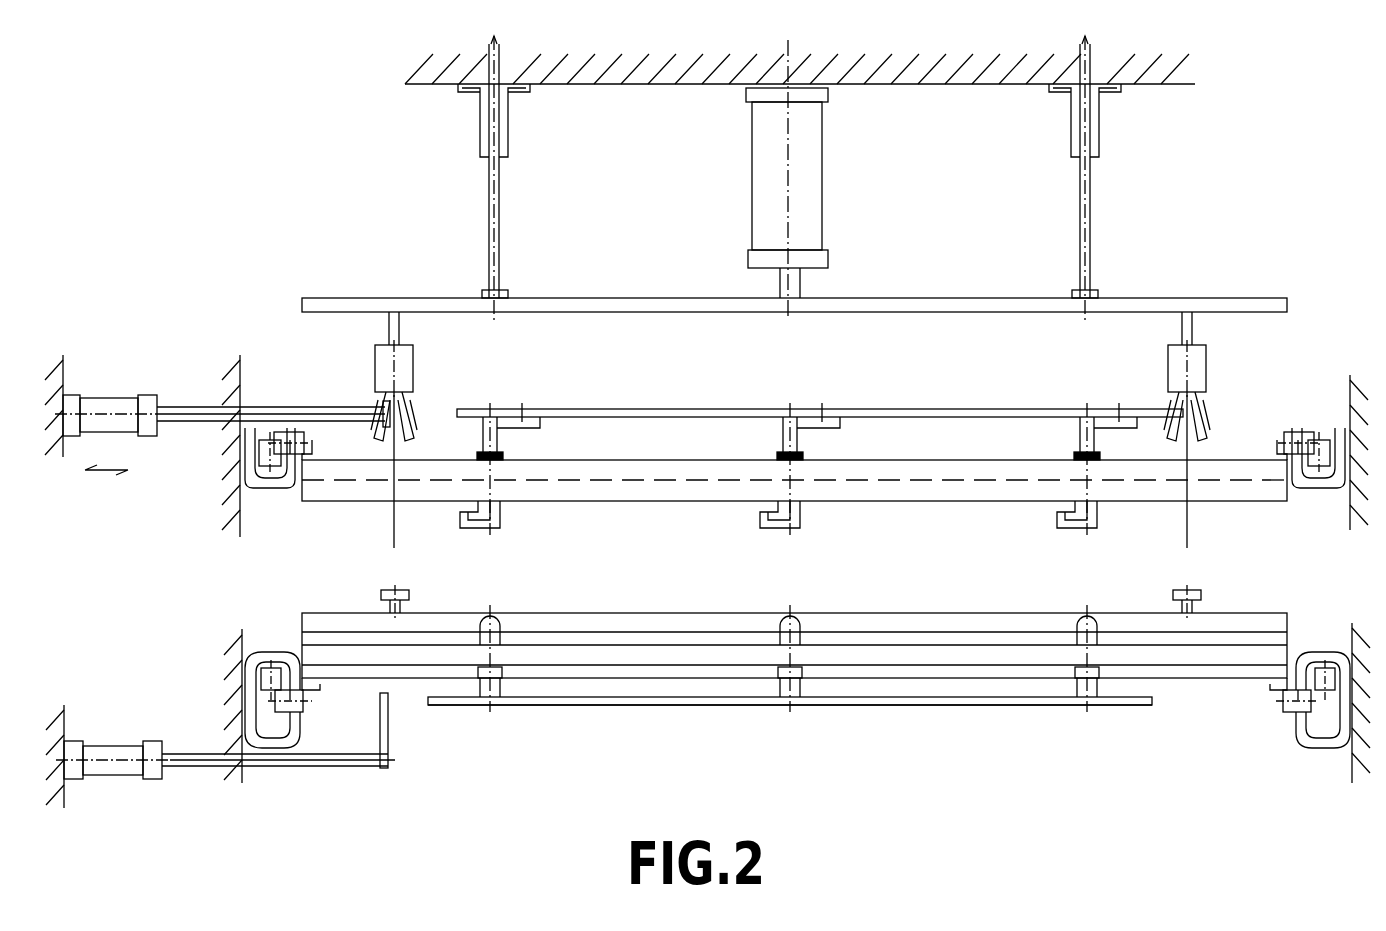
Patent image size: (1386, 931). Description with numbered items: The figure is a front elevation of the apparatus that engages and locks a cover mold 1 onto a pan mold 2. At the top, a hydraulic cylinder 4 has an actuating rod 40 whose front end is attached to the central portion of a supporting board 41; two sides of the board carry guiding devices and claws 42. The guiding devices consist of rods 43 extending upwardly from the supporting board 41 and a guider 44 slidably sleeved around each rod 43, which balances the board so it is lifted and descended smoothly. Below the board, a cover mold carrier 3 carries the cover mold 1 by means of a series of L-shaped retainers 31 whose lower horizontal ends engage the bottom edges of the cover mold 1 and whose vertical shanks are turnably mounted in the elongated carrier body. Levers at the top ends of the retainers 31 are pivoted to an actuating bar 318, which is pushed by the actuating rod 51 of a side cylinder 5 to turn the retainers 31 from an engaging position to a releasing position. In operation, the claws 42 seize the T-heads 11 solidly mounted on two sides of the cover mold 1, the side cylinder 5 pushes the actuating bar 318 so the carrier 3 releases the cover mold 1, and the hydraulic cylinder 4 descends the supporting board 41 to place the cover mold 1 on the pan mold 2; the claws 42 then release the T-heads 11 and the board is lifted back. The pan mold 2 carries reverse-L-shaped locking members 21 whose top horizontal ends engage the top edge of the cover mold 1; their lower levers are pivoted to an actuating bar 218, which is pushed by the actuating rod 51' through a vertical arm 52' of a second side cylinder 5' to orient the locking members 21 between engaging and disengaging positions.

The cover mold 1 is at (958, 625).
The pan mold 2 is at (950, 655).
The cover mold carrier 3 is at (930, 495).
The hydraulic cylinder 4 is at (816, 245).
The side cylinder 5 is at (105, 410).
The second side cylinder 5' is at (108, 742).
The T-heads 11 is at (405, 595).
The locking members 21 is at (496, 632).
The L-shaped retainers 31 is at (498, 441).
The actuating rod 40 is at (798, 288).
The supporting board 41 is at (948, 305).
The claws 42 is at (414, 352).
The rods 43 is at (499, 283).
The guider 44 is at (508, 150).
The actuating rod 51 is at (273, 390).
The actuating rod 51' is at (278, 786).
The vertical arm 52' is at (417, 741).
The actuating bar 218 is at (641, 702).
The actuating bar 318 is at (680, 412).